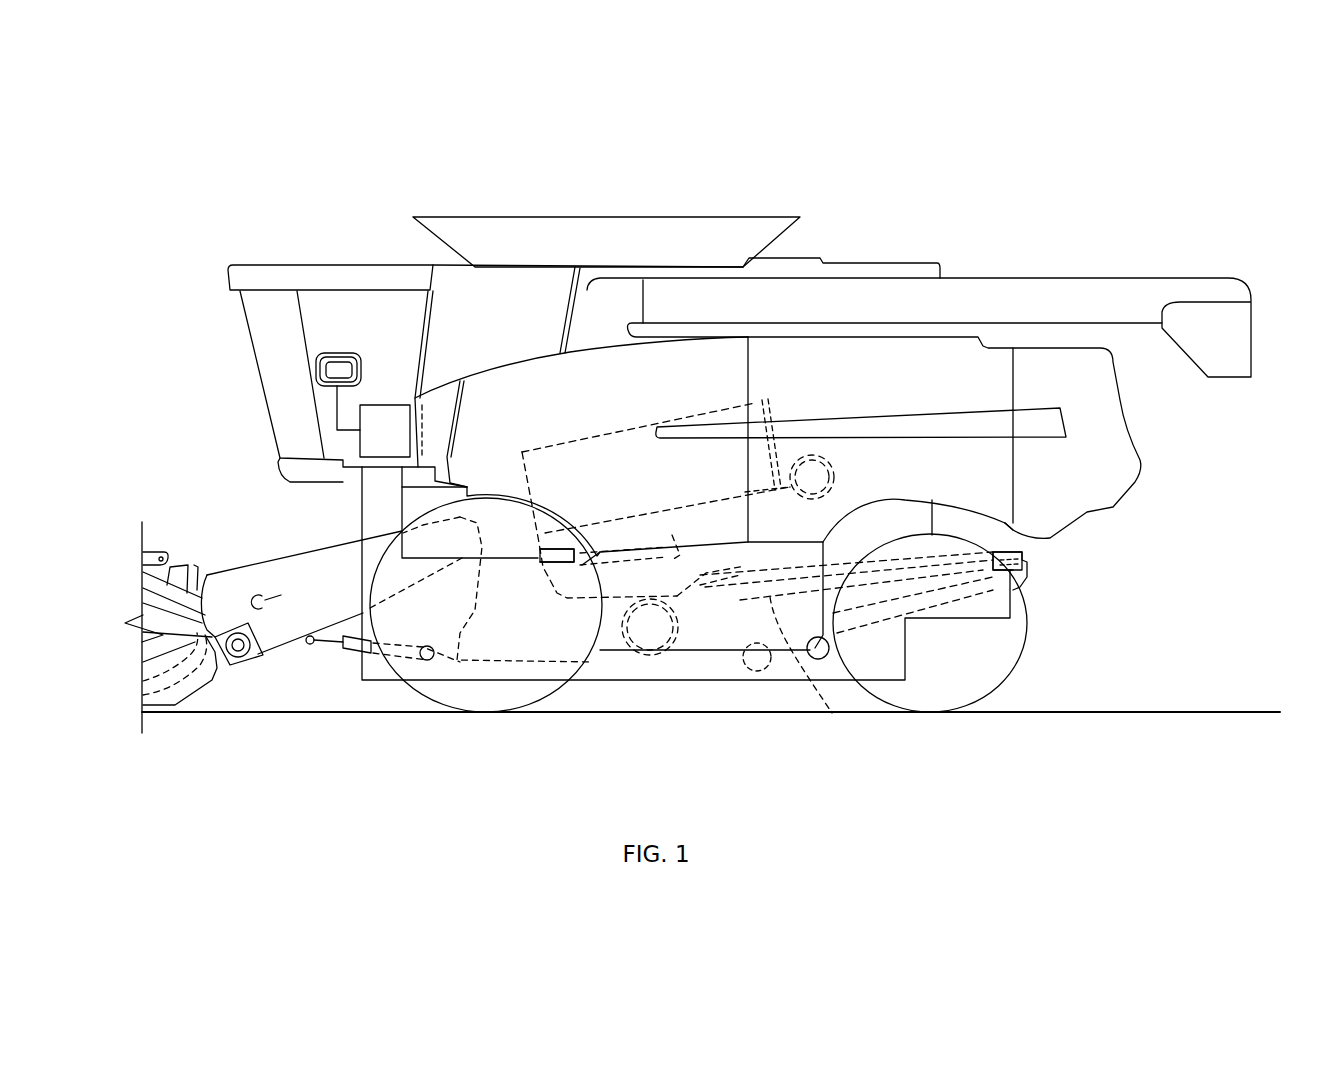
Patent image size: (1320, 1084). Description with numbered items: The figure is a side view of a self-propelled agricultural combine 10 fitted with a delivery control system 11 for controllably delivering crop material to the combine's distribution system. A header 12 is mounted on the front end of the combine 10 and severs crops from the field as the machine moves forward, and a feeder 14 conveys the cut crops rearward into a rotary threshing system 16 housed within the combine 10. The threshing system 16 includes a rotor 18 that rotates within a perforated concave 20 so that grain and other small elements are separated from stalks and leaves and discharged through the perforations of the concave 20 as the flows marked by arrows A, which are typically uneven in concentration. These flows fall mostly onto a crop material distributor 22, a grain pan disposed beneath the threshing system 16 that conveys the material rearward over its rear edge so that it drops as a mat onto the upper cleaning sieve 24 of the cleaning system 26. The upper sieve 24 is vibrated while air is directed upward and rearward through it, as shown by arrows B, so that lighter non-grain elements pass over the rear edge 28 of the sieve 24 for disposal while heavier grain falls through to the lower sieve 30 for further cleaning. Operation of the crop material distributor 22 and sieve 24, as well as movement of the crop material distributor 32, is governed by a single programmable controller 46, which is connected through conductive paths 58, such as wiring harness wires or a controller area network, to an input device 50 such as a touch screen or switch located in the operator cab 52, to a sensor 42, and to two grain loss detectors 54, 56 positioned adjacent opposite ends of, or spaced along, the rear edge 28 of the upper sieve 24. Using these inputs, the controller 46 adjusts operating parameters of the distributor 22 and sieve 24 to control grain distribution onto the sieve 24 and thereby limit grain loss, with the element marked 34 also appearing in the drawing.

The agricultural combine 10 is at (1037, 160).
The delivery control system 11 is at (862, 227).
The header 12 is at (160, 540).
The feeder 14 is at (242, 570).
The rotary threshing system 16 is at (584, 430).
The rotor 18 is at (766, 398).
The perforated concave 20 is at (636, 426).
The crop material distributor 22 is at (625, 548).
The upper cleaning sieve 24 is at (853, 508).
The cleaning system 26 is at (900, 524).
The rear edge 28 is at (1093, 528).
The lower sieve 30 is at (832, 713).
The crop material distributor 32 is at (660, 545).
The sieve 34 is at (688, 542).
The sensor 42 is at (538, 549).
The controller 46 is at (392, 405).
The input device 50 is at (337, 353).
The operator cab 52 is at (244, 329).
The grain loss detector 54 is at (1030, 563).
The grain loss detector 56 is at (1007, 561).
The conductive paths 58 is at (402, 527).